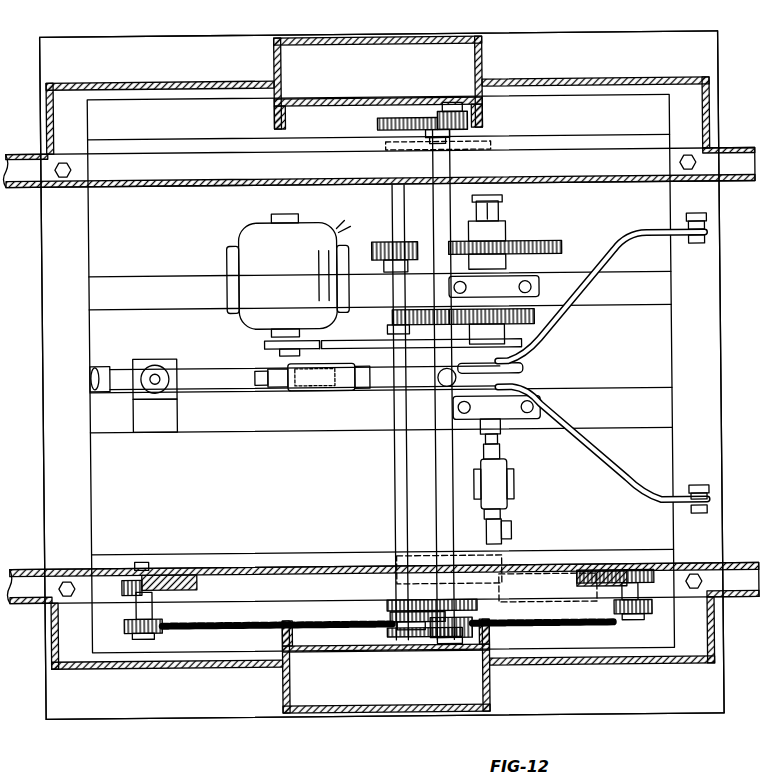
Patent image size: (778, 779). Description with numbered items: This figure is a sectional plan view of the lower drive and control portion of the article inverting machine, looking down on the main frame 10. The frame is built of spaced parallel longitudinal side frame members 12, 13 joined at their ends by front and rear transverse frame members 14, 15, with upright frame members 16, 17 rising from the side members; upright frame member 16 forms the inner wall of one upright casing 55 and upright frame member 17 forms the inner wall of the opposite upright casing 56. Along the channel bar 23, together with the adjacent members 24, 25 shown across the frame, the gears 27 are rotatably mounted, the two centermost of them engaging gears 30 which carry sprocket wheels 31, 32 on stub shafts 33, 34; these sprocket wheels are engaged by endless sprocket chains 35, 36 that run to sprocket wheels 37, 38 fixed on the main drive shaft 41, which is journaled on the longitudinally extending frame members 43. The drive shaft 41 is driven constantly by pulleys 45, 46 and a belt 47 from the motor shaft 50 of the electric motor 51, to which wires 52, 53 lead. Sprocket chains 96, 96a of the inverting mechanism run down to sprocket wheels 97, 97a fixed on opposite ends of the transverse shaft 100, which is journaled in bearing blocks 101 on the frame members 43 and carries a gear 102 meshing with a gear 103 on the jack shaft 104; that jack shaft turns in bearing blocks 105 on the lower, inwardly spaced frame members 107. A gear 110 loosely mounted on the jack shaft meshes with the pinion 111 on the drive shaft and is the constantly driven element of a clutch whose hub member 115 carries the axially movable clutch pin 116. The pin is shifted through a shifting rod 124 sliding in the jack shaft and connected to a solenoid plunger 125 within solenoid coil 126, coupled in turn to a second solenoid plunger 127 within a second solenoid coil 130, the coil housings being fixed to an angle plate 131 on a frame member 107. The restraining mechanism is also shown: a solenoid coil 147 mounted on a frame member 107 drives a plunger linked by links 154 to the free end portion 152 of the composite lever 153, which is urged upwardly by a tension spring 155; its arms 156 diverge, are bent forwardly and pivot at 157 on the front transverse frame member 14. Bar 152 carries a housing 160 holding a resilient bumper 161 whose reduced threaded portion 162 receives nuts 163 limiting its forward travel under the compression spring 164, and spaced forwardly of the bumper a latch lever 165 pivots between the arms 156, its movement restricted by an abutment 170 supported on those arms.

The main frame 10 is at (80, 720).
The side frame member 12 is at (196, 716).
The side frame member 13 is at (214, 34).
The front transverse frame member 14 is at (721, 394).
The rear transverse frame member 15 is at (43, 388).
The upright frame member 16 is at (336, 651).
The upright frame member 17 is at (316, 100).
The channel bar 23 is at (36, 568).
The upper cross member 24 is at (594, 148).
The rail 25 is at (254, 178).
The gear 27 is at (168, 572).
The gear 30 is at (120, 588).
The sprocket wheel 31 is at (640, 618).
The sprocket wheel 32 is at (124, 632).
The stub shaft 33 is at (616, 566).
The stub shaft 34 is at (142, 560).
The endless sprocket chain 35 is at (560, 616).
The endless sprocket chain 36 is at (204, 630).
The sprocket wheel 37 is at (382, 596).
The sprocket wheel 38 is at (392, 630).
The main drive shaft 41 is at (394, 194).
The longitudinally extending frame member 43 is at (254, 138).
The pulley 45 is at (364, 346).
The pulley 46 is at (266, 334).
The belt 47 is at (324, 346).
The motor shaft 50 is at (288, 326).
The electric motor 51 is at (240, 263).
The wire 52 is at (344, 224).
The wire 53 is at (346, 226).
The upright casing 55 is at (376, 712).
The upright casing 56 is at (432, 38).
The endless sprocket chain 96 is at (422, 640).
The endless sprocket chain 96a is at (402, 118).
The sprocket wheel 97 is at (454, 644).
The sprocket wheel 97a is at (440, 112).
The transverse shaft 100 is at (446, 160).
The bearing block 101 is at (400, 150).
The gear 102 is at (394, 310).
The gear 103 is at (534, 312).
The jack shaft 104 is at (484, 428).
The bearing block 105 is at (538, 280).
The longitudinally extending frame member 107 is at (128, 274).
The gear 110 is at (540, 242).
The pinion 111 is at (402, 242).
The hub member 115 is at (500, 208).
The clutch pin 116 is at (492, 196).
The shifting rod 124 is at (498, 440).
The solenoid plunger 125 is at (500, 454).
The solenoid coil 126 is at (512, 484).
The second solenoid plunger 127 is at (500, 538).
The second solenoid coil 130 is at (516, 590).
The angle plate 131 is at (510, 526).
The solenoid coil 147 is at (150, 357).
The free end portion 152 is at (208, 366).
The composite lever 153 is at (568, 414).
The link 154 is at (140, 400).
The tension spring 155 is at (102, 365).
The arm 156 is at (552, 336).
The pivot 157 is at (698, 246).
The housing 160 is at (328, 392).
The resilient bumper 161 is at (366, 390).
The reduced threaded portion 162 is at (260, 386).
The nut 163 is at (278, 388).
The compression spring 164 is at (306, 388).
The latch lever 165 is at (524, 370).
The abutment 170 is at (500, 346).